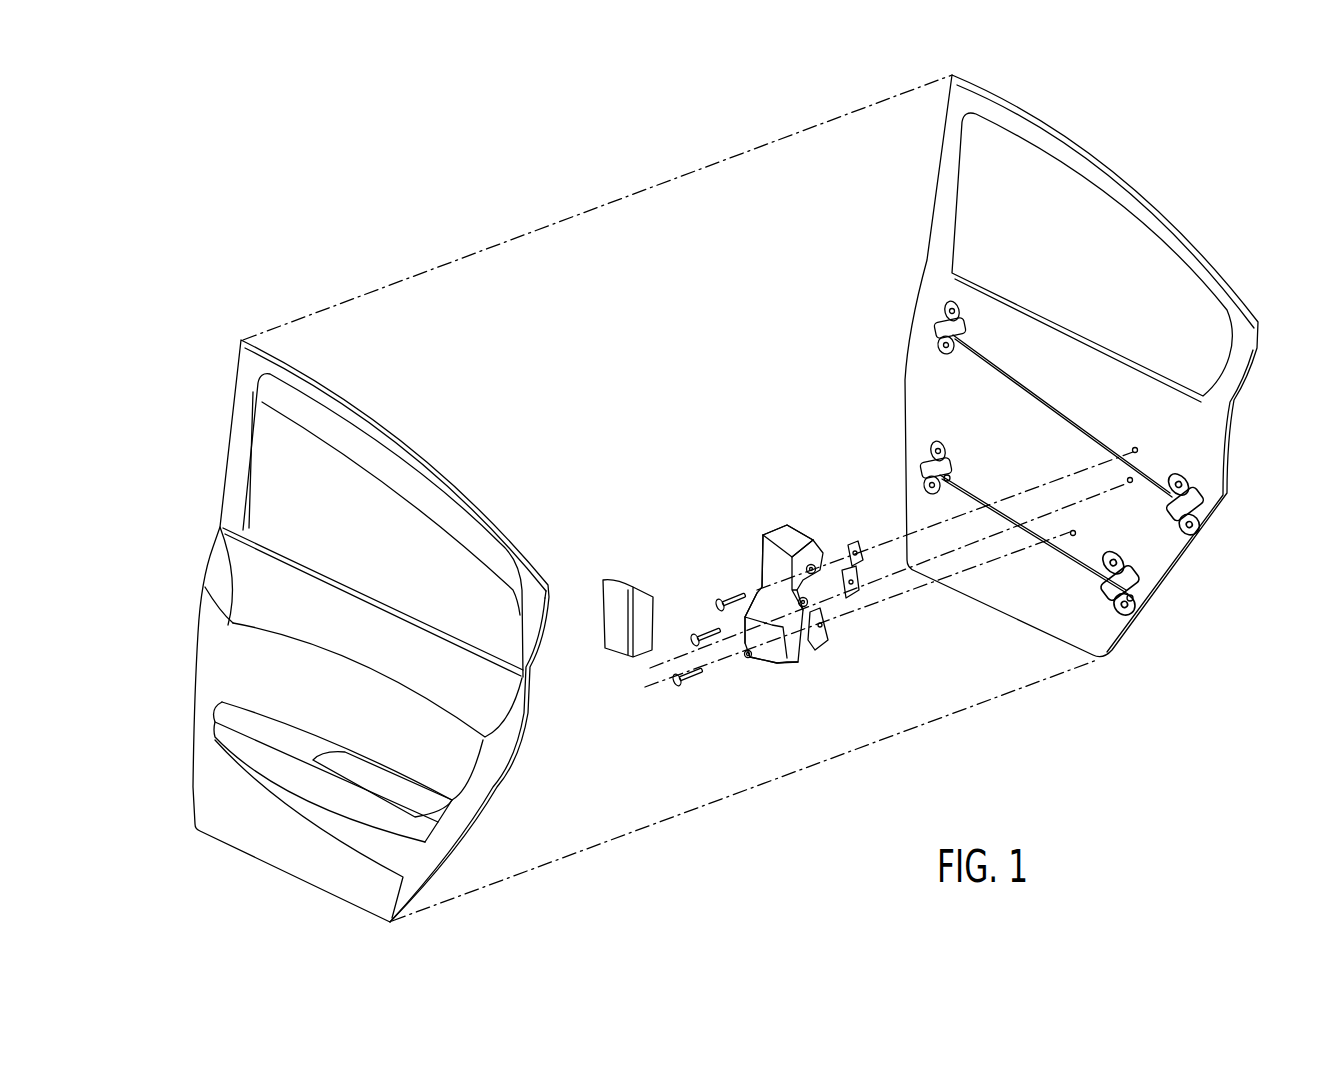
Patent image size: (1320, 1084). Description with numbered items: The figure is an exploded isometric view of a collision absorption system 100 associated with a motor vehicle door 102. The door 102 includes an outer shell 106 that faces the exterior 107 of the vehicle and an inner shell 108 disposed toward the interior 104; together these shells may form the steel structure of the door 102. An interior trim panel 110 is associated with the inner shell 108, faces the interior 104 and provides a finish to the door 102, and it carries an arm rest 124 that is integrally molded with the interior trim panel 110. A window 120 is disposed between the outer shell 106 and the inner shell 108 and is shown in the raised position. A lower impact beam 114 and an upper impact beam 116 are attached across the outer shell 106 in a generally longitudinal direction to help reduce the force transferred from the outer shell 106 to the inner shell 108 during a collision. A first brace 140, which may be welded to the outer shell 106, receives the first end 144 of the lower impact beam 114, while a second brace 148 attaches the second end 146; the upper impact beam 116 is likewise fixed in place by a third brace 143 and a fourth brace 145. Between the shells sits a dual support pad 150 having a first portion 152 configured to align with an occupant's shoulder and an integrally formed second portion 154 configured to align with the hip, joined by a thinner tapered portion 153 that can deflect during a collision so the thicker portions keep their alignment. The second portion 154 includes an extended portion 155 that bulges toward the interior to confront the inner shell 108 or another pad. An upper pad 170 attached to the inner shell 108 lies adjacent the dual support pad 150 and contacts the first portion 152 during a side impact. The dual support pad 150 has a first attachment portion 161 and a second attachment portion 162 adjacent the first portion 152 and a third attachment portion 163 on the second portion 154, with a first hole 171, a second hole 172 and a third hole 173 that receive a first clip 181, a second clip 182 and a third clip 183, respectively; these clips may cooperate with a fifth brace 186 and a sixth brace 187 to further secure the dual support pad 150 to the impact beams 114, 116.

The collision absorption system 100 is at (714, 332).
The door 102 is at (675, 142).
The interior 104 is at (170, 790).
The outer shell 106 is at (1103, 167).
The exterior 107 is at (1222, 217).
The inner shell 108 is at (488, 802).
The interior trim panel 110 is at (315, 833).
The lower impact beam 114 is at (1007, 513).
The upper impact beam 116 is at (1035, 398).
The window 120 is at (330, 440).
The arm rest 124 is at (303, 723).
The first brace 140 is at (1133, 573).
The third brace 143 is at (1207, 493).
The first end 144 is at (1130, 600).
The fourth brace 145 is at (937, 325).
The second end 146 is at (947, 477).
The second brace 148 is at (923, 463).
The dual support pad 150 is at (775, 520).
The first portion 152 is at (772, 558).
The tapered portion 153 is at (763, 573).
The second portion 154 is at (743, 610).
The extended portion 155 is at (767, 650).
The first attachment portion 161 is at (812, 563).
The second attachment portion 162 is at (806, 598).
The third attachment portion 163 is at (746, 660).
The upper pad 170 is at (612, 582).
The first hole 171 is at (777, 568).
The second hole 172 is at (795, 665).
The third hole 173 is at (742, 657).
The first clip 181 is at (714, 607).
The second clip 182 is at (690, 648).
The third clip 183 is at (670, 685).
The fifth brace 186 is at (855, 592).
The sixth brace 187 is at (828, 638).